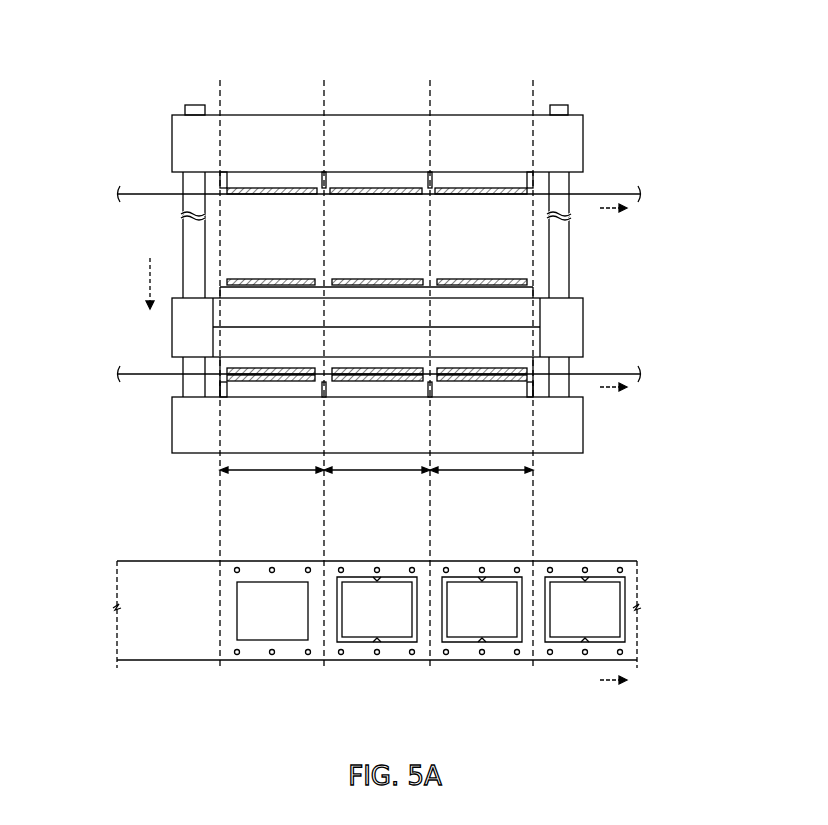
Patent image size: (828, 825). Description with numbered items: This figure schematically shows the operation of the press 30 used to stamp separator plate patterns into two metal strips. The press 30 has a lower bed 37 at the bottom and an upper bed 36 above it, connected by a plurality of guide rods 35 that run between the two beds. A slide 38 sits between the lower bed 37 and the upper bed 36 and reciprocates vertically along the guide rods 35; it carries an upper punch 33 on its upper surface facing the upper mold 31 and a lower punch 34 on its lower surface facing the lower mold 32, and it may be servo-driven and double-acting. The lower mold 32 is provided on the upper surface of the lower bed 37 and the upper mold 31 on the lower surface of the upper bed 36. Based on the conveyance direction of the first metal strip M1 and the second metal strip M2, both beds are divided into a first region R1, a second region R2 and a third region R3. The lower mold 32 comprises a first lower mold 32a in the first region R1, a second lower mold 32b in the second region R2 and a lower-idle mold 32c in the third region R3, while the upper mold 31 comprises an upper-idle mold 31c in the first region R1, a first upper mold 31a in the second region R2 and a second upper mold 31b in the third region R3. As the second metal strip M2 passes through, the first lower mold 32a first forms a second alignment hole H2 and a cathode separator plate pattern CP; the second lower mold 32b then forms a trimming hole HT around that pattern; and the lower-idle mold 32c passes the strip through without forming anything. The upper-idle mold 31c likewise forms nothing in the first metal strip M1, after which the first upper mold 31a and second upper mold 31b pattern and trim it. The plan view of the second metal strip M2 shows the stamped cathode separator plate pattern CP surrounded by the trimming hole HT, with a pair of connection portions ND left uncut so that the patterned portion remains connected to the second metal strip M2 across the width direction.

The press 30 is at (146, 125).
The upper mold 31 is at (290, 50).
The first upper mold 31a is at (408, 188).
The second upper mold 31b is at (497, 188).
The upper-idle mold 31c is at (283, 188).
The lower mold 32 is at (242, 520).
The first lower mold 32a is at (258, 383).
The second lower mold 32b is at (345, 383).
The lower-idle mold 32c is at (472, 383).
The upper punch 33 is at (533, 289).
The lower punch 34 is at (215, 362).
The guide rod 35 is at (565, 180).
The upper bed 36 is at (573, 144).
The lower bed 37 is at (573, 429).
The slide 38 is at (573, 326).
The first metal strip M1 is at (142, 204).
The second metal strip M2 is at (142, 384).
The first region R1 is at (272, 480).
The second region R2 is at (377, 480).
The third region R3 is at (481, 480).
The cathode separator plate pattern CP is at (268, 628).
The second alignment hole H2 is at (308, 655).
The connection portion ND is at (378, 642).
The trimming hole HT is at (403, 643).